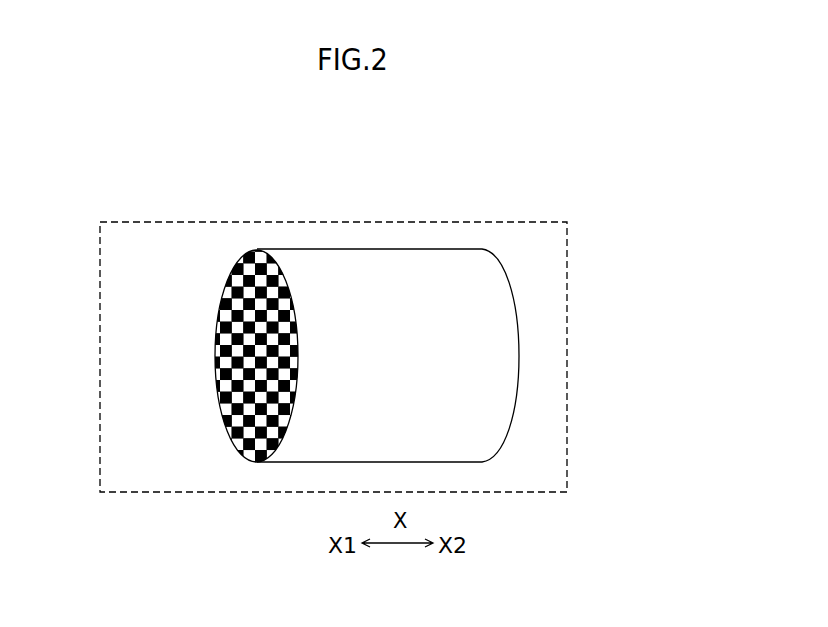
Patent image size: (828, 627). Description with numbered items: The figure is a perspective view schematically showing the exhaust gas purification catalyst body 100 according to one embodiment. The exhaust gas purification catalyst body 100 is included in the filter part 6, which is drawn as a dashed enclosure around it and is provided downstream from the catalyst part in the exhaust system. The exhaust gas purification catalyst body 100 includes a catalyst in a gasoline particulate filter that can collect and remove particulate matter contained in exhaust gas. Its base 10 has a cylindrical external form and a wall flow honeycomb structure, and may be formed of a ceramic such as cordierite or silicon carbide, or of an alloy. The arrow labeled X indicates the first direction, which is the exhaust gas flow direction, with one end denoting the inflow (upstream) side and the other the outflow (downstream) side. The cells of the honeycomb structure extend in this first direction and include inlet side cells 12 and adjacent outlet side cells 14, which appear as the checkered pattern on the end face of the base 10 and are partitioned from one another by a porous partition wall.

The filter part 6 is at (553, 220).
The base 10 is at (341, 258).
The exhaust gas purification catalyst body 100 is at (323, 306).
The inlet side cells 12 is at (217, 315).
The outlet side cells 14 is at (213, 343).